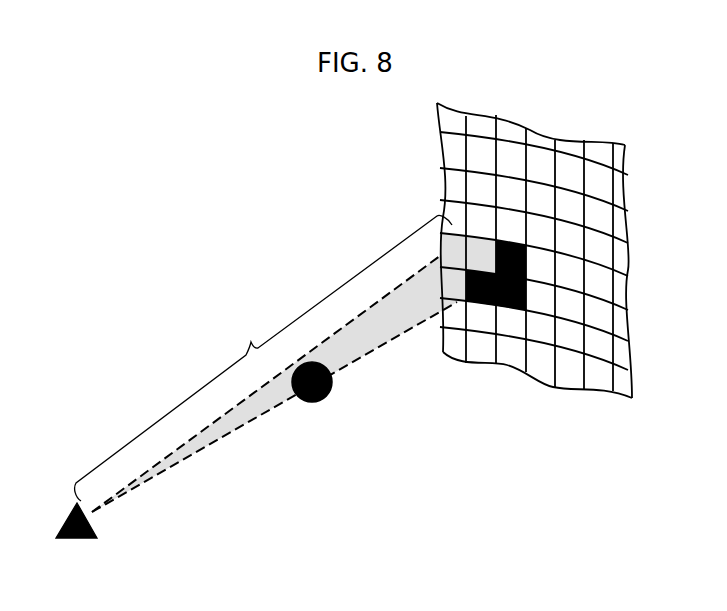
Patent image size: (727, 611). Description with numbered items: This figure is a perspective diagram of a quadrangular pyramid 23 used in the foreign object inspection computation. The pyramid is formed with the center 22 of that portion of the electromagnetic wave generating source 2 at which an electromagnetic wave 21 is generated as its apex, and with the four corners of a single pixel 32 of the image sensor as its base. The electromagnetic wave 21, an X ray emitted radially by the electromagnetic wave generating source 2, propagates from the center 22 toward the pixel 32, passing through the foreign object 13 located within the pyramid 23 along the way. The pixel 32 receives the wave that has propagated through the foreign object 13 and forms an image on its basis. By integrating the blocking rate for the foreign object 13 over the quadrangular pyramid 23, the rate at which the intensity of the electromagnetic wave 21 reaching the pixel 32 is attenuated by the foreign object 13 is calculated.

The electromagnetic wave generating source 2 is at (73, 516).
The foreign object 13 is at (315, 402).
The electromagnetic wave 21 is at (222, 440).
The center 22 is at (93, 520).
The quadrangular pyramid 23 is at (263, 358).
The pixel 32 is at (481, 247).